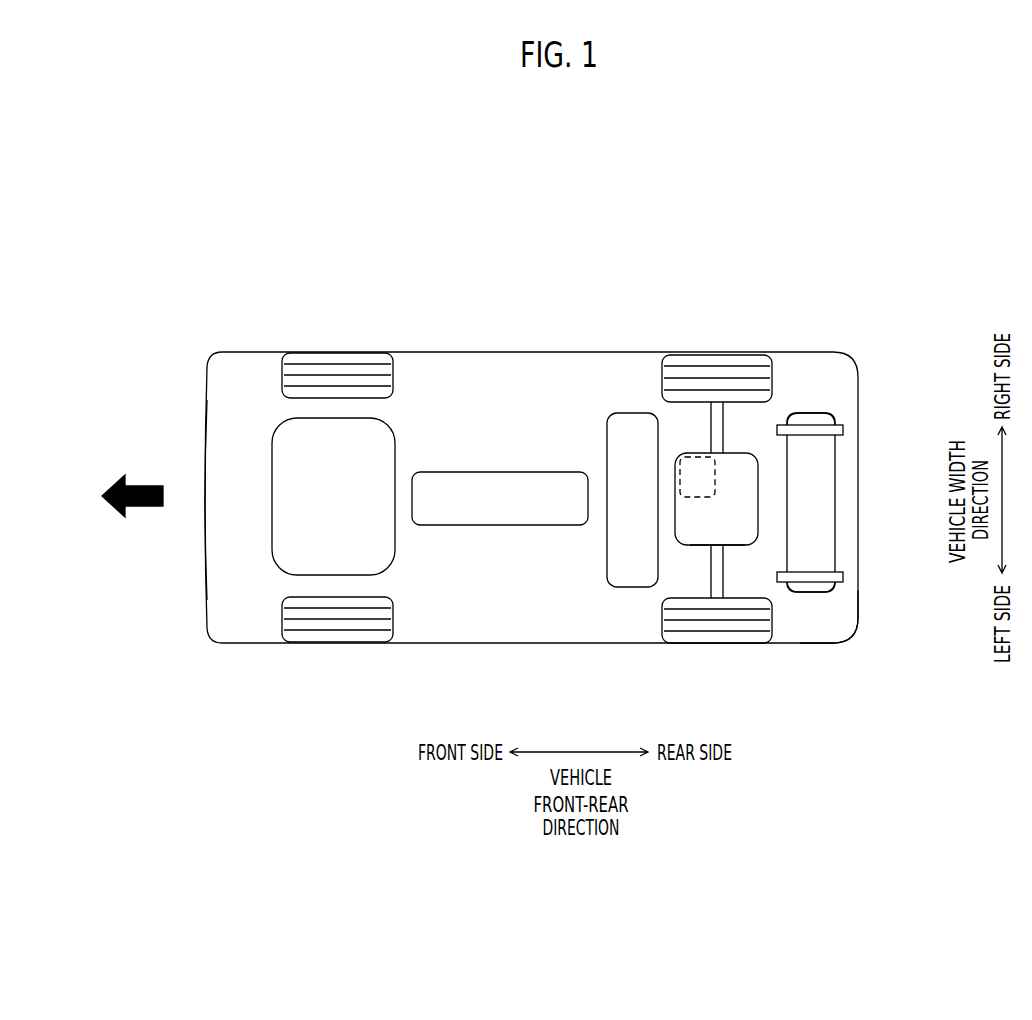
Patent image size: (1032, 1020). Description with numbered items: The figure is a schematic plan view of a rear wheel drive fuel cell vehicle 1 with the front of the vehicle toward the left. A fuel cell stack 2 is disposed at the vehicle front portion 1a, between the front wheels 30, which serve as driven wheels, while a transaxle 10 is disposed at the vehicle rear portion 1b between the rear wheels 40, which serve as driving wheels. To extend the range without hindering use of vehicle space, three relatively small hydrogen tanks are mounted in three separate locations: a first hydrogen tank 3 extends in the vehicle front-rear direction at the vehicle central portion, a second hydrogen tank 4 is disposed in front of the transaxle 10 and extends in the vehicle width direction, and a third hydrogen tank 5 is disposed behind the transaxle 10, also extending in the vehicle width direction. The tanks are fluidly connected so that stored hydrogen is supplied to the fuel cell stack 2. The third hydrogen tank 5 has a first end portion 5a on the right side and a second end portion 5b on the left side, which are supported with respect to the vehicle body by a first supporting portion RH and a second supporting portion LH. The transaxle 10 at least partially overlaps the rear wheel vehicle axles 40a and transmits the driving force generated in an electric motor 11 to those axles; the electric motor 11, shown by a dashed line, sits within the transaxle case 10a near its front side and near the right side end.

The fuel cell vehicle 1 is at (531, 350).
The vehicle front portion 1a is at (212, 523).
The vehicle rear portion 1b is at (832, 625).
The fuel cell stack 2 is at (285, 453).
The first hydrogen tank 3 is at (460, 508).
The second hydrogen tank 4 is at (645, 422).
The third hydrogen tank 5 is at (825, 495).
The first end portion 5a is at (810, 422).
The second end portion 5b is at (825, 588).
The transaxle 10 is at (740, 550).
The transaxle case 10a is at (700, 547).
The electric motor 11 is at (677, 477).
The front wheels 30 is at (335, 627).
The rear wheels 40 is at (713, 643).
The rear wheel vehicle axles 40a is at (720, 423).
The first supporting portion RH is at (842, 430).
The second supporting portion LH is at (843, 578).